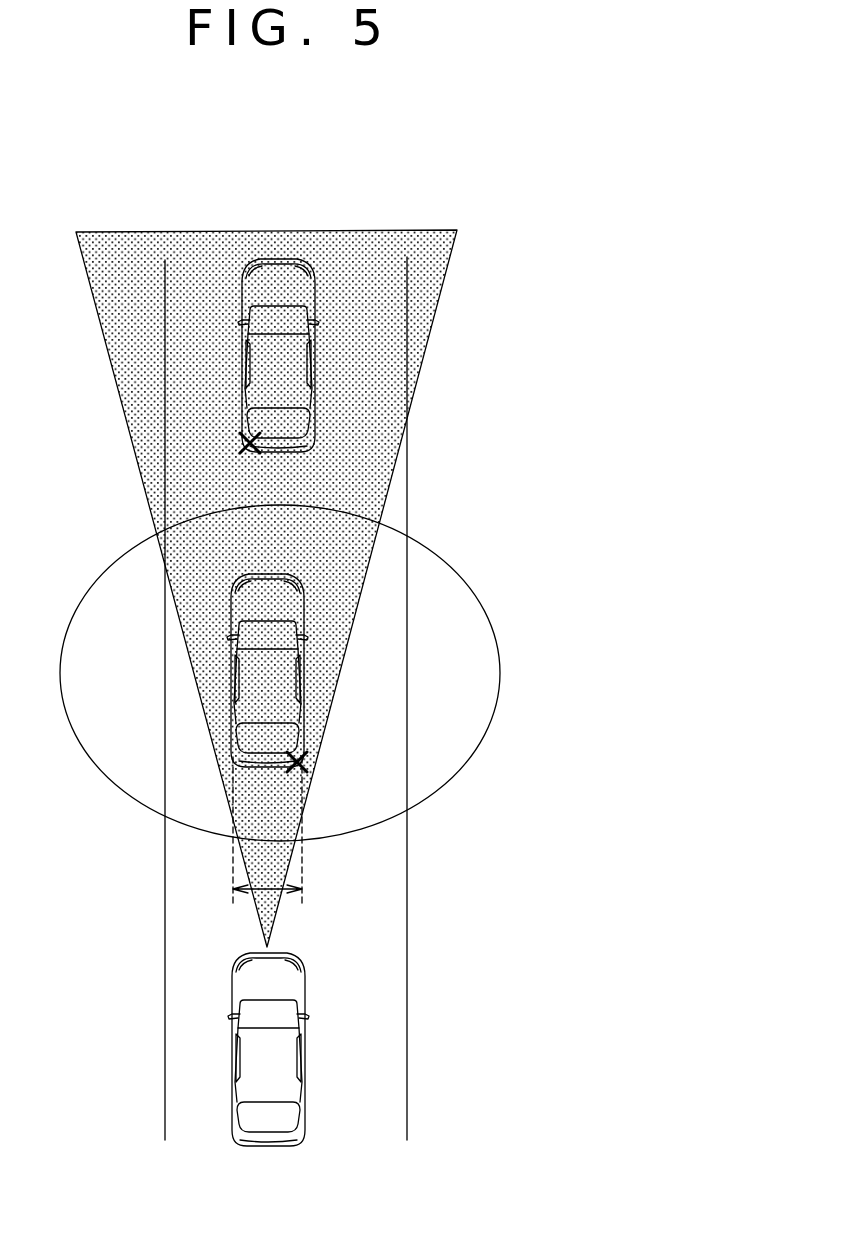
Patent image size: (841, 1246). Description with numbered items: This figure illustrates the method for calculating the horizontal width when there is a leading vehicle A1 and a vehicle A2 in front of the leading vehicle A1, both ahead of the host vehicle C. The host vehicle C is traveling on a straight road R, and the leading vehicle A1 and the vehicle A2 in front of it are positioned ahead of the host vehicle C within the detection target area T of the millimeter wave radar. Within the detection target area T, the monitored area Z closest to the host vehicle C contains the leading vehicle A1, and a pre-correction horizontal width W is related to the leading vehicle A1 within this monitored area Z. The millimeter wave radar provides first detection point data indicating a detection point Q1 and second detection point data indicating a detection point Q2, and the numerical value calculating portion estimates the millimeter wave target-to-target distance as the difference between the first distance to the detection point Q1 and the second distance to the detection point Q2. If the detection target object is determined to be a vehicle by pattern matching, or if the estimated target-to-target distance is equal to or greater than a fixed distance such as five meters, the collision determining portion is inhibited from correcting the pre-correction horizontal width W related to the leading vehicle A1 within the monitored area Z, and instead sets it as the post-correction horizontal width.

The detection target area T is at (425, 231).
The leading vehicle A1 is at (307, 688).
The vehicle in front of the leading vehicle A2 is at (318, 293).
The detection point Q1 is at (307, 765).
The detection point Q2 is at (246, 444).
The monitored area Z is at (473, 754).
The straight road R is at (409, 945).
The host vehicle C is at (306, 1085).
The pre-correction horizontal width W is at (282, 832).